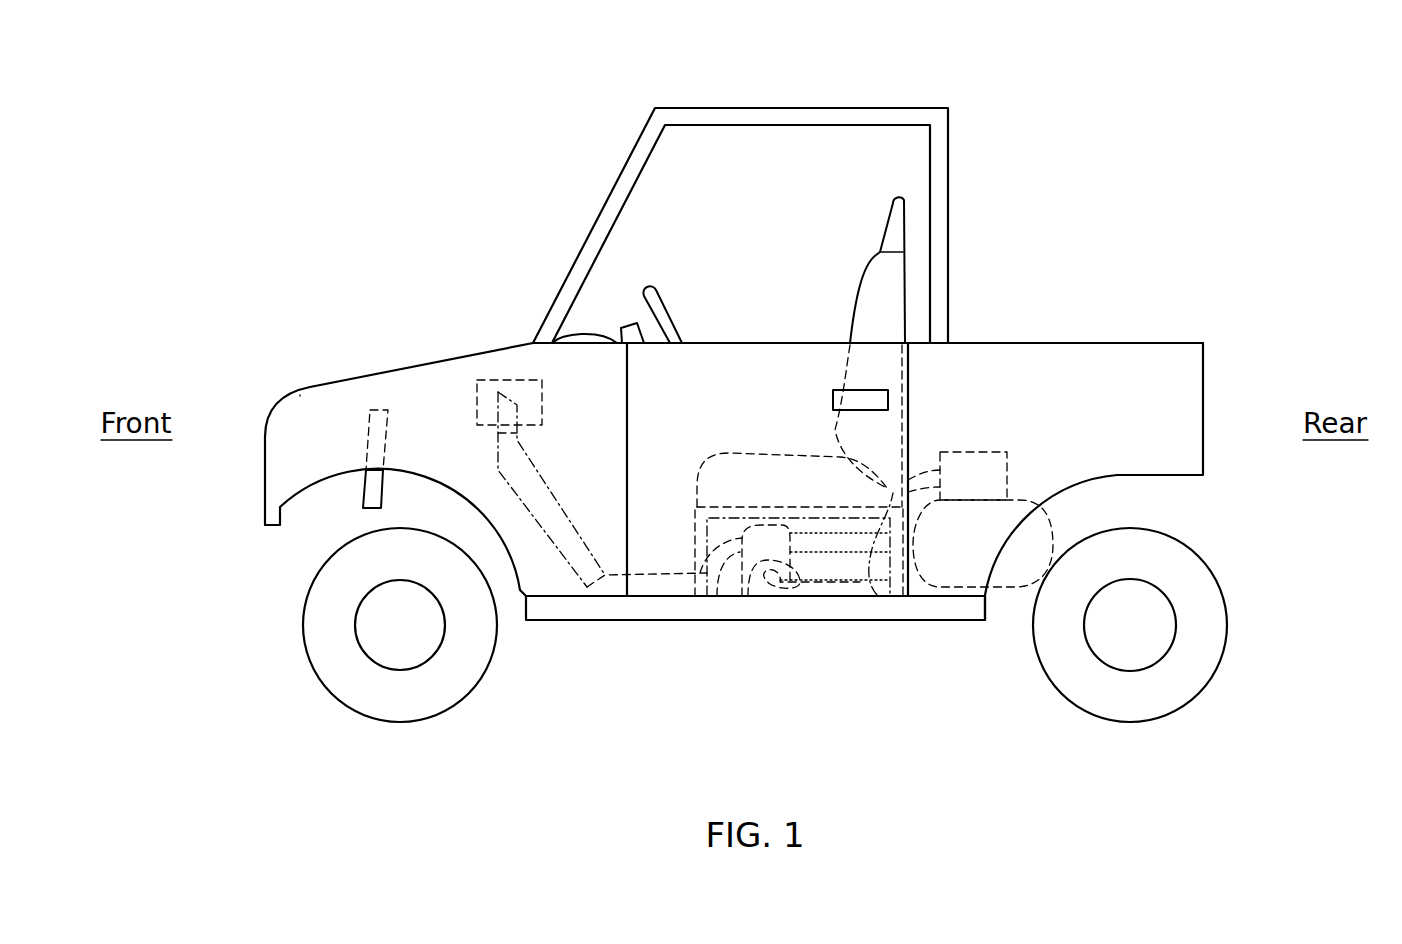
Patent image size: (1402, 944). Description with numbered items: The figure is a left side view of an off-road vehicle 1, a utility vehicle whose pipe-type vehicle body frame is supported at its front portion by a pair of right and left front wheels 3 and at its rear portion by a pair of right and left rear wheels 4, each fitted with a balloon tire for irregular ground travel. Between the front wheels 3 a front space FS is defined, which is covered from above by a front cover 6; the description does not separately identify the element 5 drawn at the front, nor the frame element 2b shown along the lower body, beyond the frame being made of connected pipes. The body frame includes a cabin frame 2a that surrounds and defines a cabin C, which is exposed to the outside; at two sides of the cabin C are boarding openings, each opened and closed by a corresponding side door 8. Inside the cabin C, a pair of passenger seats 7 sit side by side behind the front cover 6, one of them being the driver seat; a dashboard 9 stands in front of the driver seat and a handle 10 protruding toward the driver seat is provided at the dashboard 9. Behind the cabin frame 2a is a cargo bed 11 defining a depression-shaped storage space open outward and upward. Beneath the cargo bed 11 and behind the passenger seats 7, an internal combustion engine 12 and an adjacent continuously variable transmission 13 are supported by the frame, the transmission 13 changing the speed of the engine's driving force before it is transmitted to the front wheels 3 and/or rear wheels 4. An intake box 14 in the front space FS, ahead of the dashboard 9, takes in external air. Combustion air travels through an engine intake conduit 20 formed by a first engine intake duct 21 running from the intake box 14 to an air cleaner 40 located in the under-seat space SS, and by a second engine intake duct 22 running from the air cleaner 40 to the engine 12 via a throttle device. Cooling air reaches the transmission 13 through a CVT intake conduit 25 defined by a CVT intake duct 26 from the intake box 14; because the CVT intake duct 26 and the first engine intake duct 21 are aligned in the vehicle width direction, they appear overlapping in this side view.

The off-road vehicle 1 is at (448, 146).
The cabin frame 2a is at (633, 152).
The vehicle body frame side member 2b is at (697, 525).
The front wheels 3 is at (303, 613).
The rear wheels 4 is at (1228, 622).
The front bumper stay 5 is at (357, 490).
The front cover 6 is at (370, 373).
The passenger seats 7 is at (865, 292).
The side door 8 is at (721, 355).
The dashboard 9 is at (583, 333).
The handle 10 is at (653, 290).
The cargo bed 11 is at (1147, 343).
The internal combustion engine 12 is at (978, 452).
The continuously variable transmission 13 is at (1052, 535).
The intake box 14 is at (465, 395).
The engine intake conduit 20 is at (607, 580).
The first engine intake duct 21 is at (553, 550).
The second engine intake duct 22 is at (877, 595).
The CVT intake conduit 25 is at (845, 553).
The CVT intake duct 26 is at (733, 553).
The air cleaner 40 is at (812, 568).
The front space FS is at (418, 408).
The under-seat space SS is at (822, 563).
The cabin C is at (792, 306).